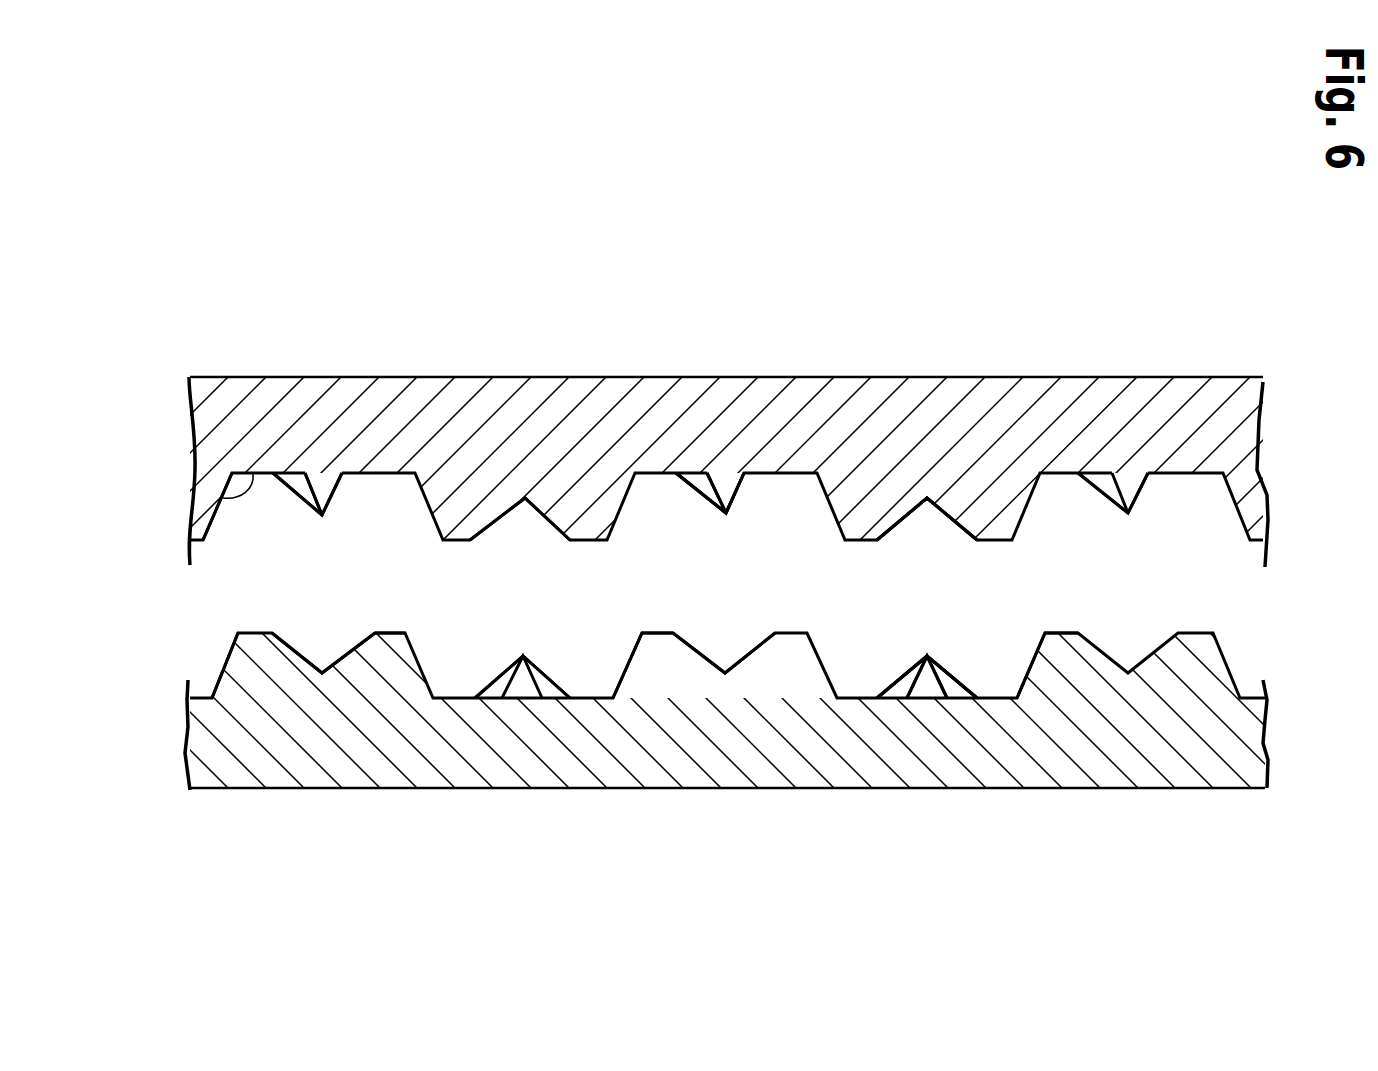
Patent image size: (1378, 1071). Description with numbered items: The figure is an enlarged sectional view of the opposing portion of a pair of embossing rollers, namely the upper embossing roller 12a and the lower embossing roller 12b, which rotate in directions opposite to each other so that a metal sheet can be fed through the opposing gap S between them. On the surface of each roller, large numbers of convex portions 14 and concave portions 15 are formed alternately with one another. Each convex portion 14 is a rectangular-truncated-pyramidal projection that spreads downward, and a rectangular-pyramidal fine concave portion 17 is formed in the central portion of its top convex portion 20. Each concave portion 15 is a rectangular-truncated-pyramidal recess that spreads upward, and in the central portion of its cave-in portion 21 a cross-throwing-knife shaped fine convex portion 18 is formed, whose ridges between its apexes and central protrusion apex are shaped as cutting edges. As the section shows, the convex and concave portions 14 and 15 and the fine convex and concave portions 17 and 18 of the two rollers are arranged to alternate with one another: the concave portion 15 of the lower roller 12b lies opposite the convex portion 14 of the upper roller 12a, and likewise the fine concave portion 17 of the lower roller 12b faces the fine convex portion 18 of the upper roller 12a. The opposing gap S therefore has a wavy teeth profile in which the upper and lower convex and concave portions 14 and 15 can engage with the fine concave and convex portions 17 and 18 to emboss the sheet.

The upper embossing roller 12a is at (355, 347).
The lower embossing roller 12b is at (395, 830).
The convex portion 14 is at (222, 637).
The concave portion 15 is at (237, 527).
The fine concave portion 17 is at (315, 647).
The fine convex portion 18 is at (347, 488).
The convex portion of the convex portion 20 is at (393, 638).
The cave-in portion 21 is at (223, 498).
The opposing gap S is at (1197, 593).